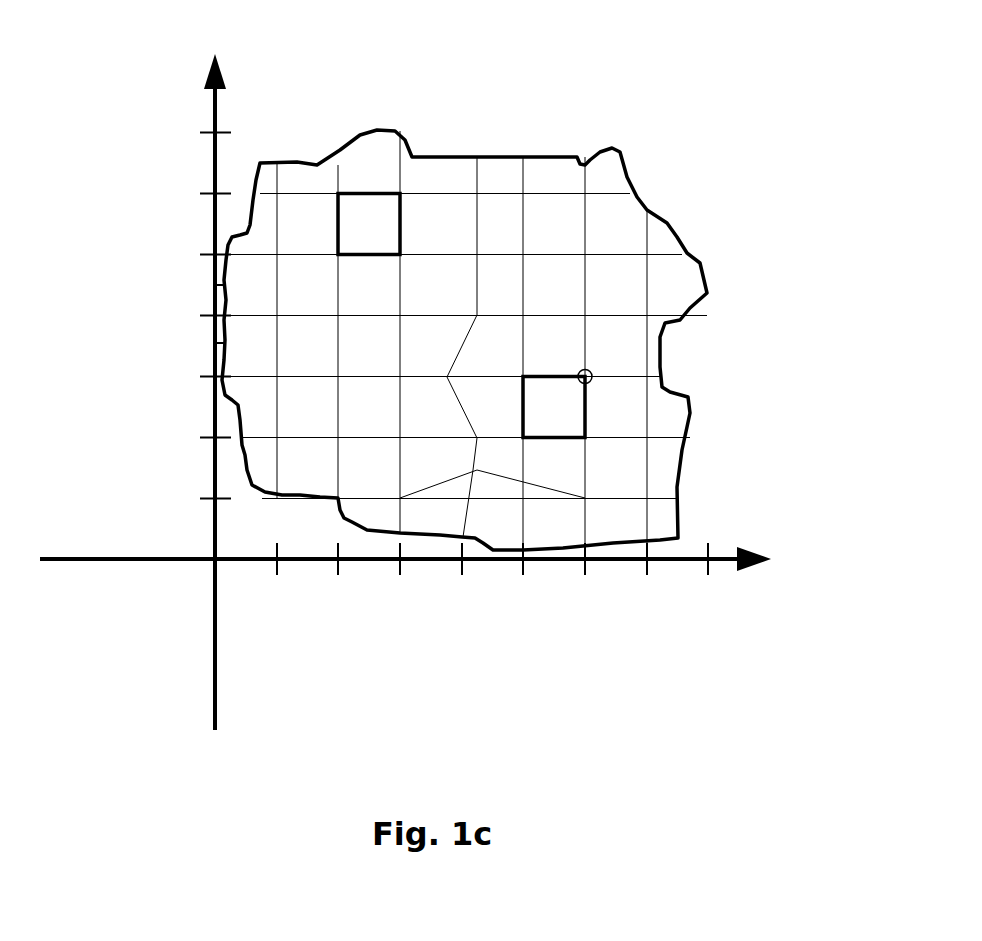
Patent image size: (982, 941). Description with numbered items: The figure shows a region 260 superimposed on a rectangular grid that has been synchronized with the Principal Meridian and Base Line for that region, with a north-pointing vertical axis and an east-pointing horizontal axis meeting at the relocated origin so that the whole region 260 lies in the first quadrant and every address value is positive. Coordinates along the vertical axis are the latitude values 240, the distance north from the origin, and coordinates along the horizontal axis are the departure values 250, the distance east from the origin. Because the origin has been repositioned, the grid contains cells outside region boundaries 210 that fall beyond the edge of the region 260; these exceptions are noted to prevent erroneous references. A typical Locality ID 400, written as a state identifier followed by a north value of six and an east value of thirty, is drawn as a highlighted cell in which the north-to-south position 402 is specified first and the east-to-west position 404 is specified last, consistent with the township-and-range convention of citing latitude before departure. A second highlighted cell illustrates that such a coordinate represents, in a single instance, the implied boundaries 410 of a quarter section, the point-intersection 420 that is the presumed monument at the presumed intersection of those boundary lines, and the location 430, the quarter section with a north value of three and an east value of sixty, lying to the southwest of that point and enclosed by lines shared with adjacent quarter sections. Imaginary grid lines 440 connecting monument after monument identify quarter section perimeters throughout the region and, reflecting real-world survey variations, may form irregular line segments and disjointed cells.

The cells outside region boundaries 210 is at (249, 547).
The Y axis values - latitude 240 is at (160, 124).
The X axis values - departure 250 is at (719, 620).
The region 260 is at (549, 146).
The AreaPlace [6:30] Locality ID 400 is at (368, 208).
The north-to-south position 402 is at (163, 192).
The east-to-west position 404 is at (408, 605).
The implied boundaries 410 is at (585, 400).
The point-intersection 420 is at (597, 375).
The location - quarter section 430 is at (553, 423).
The imaginary grid lines 440 is at (600, 203).